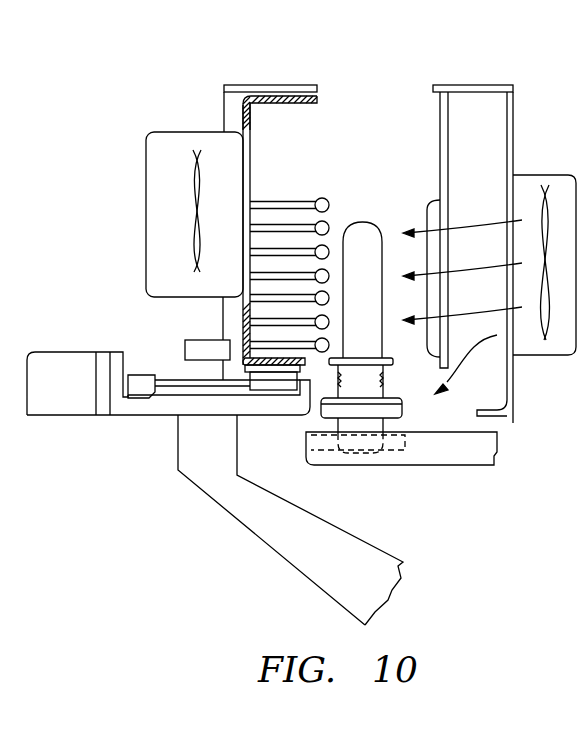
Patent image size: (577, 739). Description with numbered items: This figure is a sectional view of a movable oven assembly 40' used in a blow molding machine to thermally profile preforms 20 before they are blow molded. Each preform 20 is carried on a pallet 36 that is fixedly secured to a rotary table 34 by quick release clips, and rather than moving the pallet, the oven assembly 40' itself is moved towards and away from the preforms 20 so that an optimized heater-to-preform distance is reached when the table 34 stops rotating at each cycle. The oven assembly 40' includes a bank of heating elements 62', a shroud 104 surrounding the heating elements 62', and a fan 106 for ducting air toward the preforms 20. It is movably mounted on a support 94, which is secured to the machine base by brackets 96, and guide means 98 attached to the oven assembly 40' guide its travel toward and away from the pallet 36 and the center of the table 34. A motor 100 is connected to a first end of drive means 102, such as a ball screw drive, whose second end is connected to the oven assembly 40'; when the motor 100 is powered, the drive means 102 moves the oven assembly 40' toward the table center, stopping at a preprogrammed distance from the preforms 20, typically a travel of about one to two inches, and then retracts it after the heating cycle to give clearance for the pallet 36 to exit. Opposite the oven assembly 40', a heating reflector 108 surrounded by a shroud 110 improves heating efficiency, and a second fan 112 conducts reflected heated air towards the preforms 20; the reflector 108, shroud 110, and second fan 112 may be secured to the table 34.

The preform 20 is at (358, 222).
The rotary table 34 is at (471, 462).
The pallet 36 is at (362, 457).
The oven assembly 40' is at (204, 234).
The heating elements 62' is at (289, 249).
The support 94 is at (252, 417).
The brackets 96 is at (293, 557).
The guide means 98 is at (278, 385).
The motor 100 is at (74, 360).
The drive means 102 is at (172, 382).
The shroud 104 is at (243, 110).
The fan 106 is at (195, 177).
The heating reflector 108 is at (440, 190).
The shroud 110 is at (507, 112).
The second fan 112 is at (528, 187).